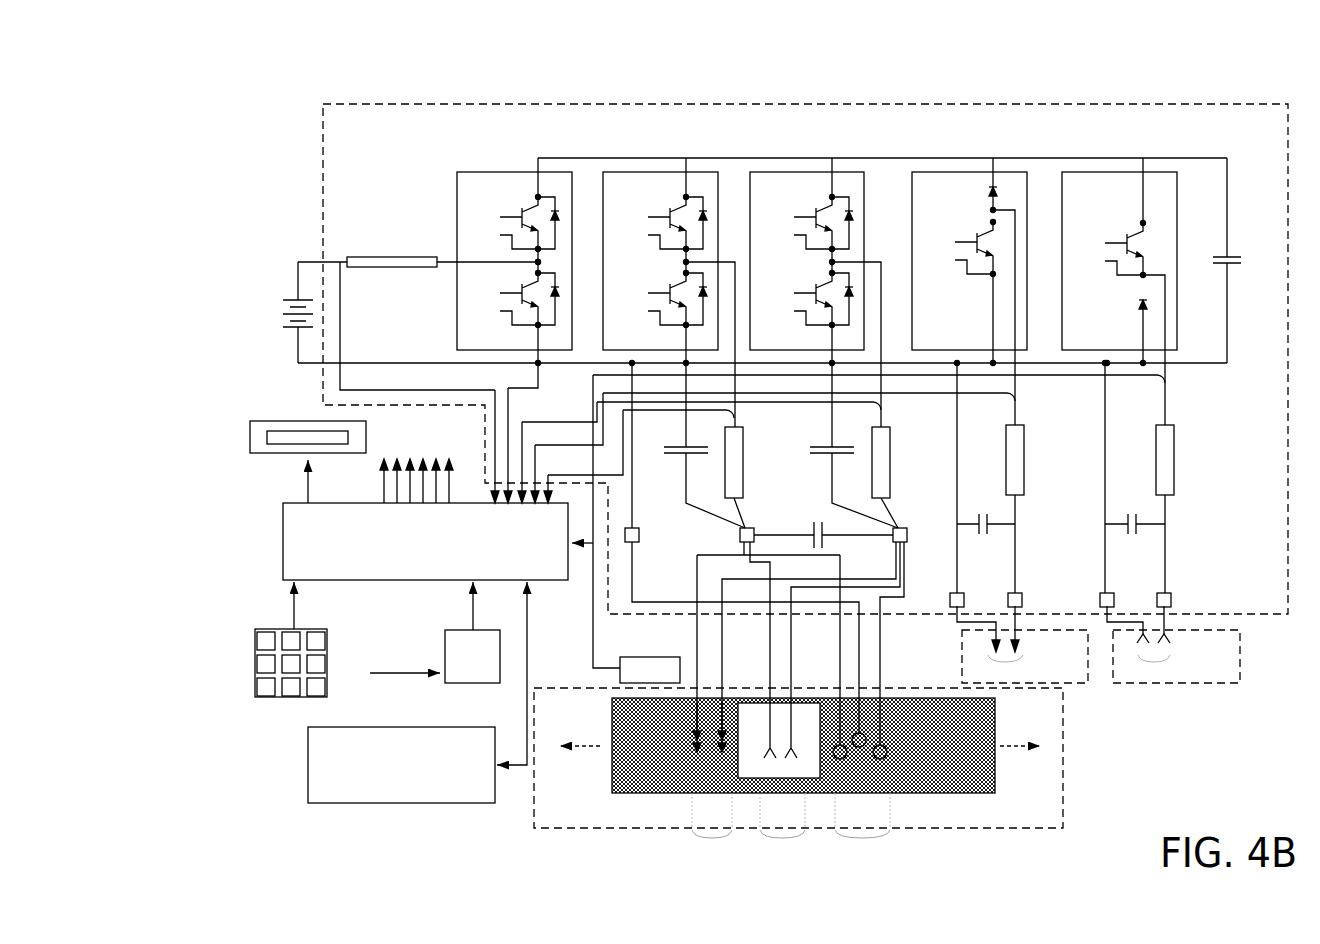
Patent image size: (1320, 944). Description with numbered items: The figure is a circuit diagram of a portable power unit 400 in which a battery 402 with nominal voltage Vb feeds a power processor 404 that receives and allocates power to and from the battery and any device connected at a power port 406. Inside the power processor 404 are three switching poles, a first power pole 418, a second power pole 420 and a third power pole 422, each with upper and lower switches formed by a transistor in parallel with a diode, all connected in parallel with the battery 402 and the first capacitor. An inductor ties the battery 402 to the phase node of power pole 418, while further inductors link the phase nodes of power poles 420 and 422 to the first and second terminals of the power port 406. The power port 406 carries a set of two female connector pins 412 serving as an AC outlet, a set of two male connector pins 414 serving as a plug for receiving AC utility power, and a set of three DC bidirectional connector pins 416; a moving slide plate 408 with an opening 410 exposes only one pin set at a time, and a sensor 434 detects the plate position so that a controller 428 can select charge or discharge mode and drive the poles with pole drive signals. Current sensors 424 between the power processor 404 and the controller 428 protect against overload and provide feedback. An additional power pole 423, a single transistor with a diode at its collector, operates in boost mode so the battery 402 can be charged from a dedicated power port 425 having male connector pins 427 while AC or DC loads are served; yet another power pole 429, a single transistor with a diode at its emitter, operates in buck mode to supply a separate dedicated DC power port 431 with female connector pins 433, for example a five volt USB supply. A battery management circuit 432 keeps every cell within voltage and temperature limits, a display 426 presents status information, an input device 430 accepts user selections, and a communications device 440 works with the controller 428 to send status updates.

The portable power unit 400 is at (766, 80).
The battery 402 is at (295, 300).
The power processor 404 is at (793, 431).
The power port 406 is at (798, 777).
The slide plate 408 is at (803, 745).
The opening 410 is at (779, 740).
The female connector pins 412 is at (782, 830).
The male connector pins 414 is at (712, 830).
The connector pins 416 is at (862, 828).
The power pole 418 is at (514, 261).
The power pole 420 is at (669, 299).
The power pole 422 is at (815, 299).
The power pole 423 is at (969, 298).
The current sensors 424 is at (557, 433).
The dedicated power port 425 is at (1022, 648).
The display 426 is at (270, 420).
The male connector pins 427 is at (990, 648).
The controller 428 is at (425, 499).
The power pole 429 is at (1119, 298).
The input device 430 is at (290, 628).
The power port 431 is at (1173, 648).
The battery management circuit 432 is at (426, 632).
The female connector pins 433 is at (1138, 648).
The sensor 434 is at (650, 670).
The communications device 440 is at (417, 692).